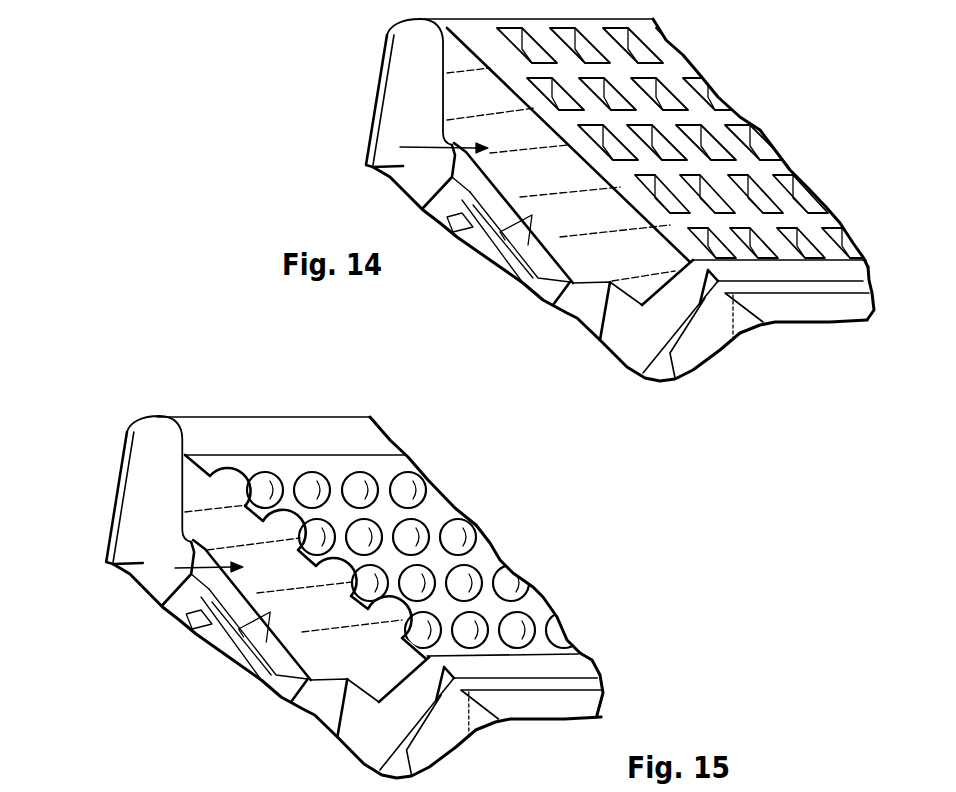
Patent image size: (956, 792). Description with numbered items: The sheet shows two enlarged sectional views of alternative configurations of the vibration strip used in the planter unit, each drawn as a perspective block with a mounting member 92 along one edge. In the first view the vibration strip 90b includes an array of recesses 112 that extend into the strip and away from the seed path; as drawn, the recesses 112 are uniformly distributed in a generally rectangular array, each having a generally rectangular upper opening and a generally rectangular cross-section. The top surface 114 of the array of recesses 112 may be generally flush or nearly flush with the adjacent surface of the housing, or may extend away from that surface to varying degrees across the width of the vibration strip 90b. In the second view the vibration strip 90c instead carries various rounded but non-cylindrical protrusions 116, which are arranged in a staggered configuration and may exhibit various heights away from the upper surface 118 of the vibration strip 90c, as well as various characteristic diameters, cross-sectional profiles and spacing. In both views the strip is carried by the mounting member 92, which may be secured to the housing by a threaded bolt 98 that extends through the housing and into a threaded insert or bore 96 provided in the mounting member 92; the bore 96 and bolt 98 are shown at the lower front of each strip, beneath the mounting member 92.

In FIG. 14, the vibration strip 90b is at (566, 202).
In FIG. 15, the vibration strip 90c is at (359, 553).
In FIG. 14, the mounting member 92 is at (366, 167).
In FIG. 15, the mounting member 92 is at (175, 443).
In FIG. 14, the threaded insert or bore 96 is at (547, 270).
In FIG. 15, the threaded insert or bore 96 is at (283, 680).
In FIG. 14, the threaded bolt 98 is at (476, 242).
In FIG. 15, the threaded bolt 98 is at (217, 643).
In FIG. 14, the recesses 112 is at (667, 100).
In FIG. 14, the top surface 114 is at (667, 135).
In FIG. 15, the protrusions 116 is at (510, 632).
In FIG. 15, the upper surface 118 is at (420, 537).